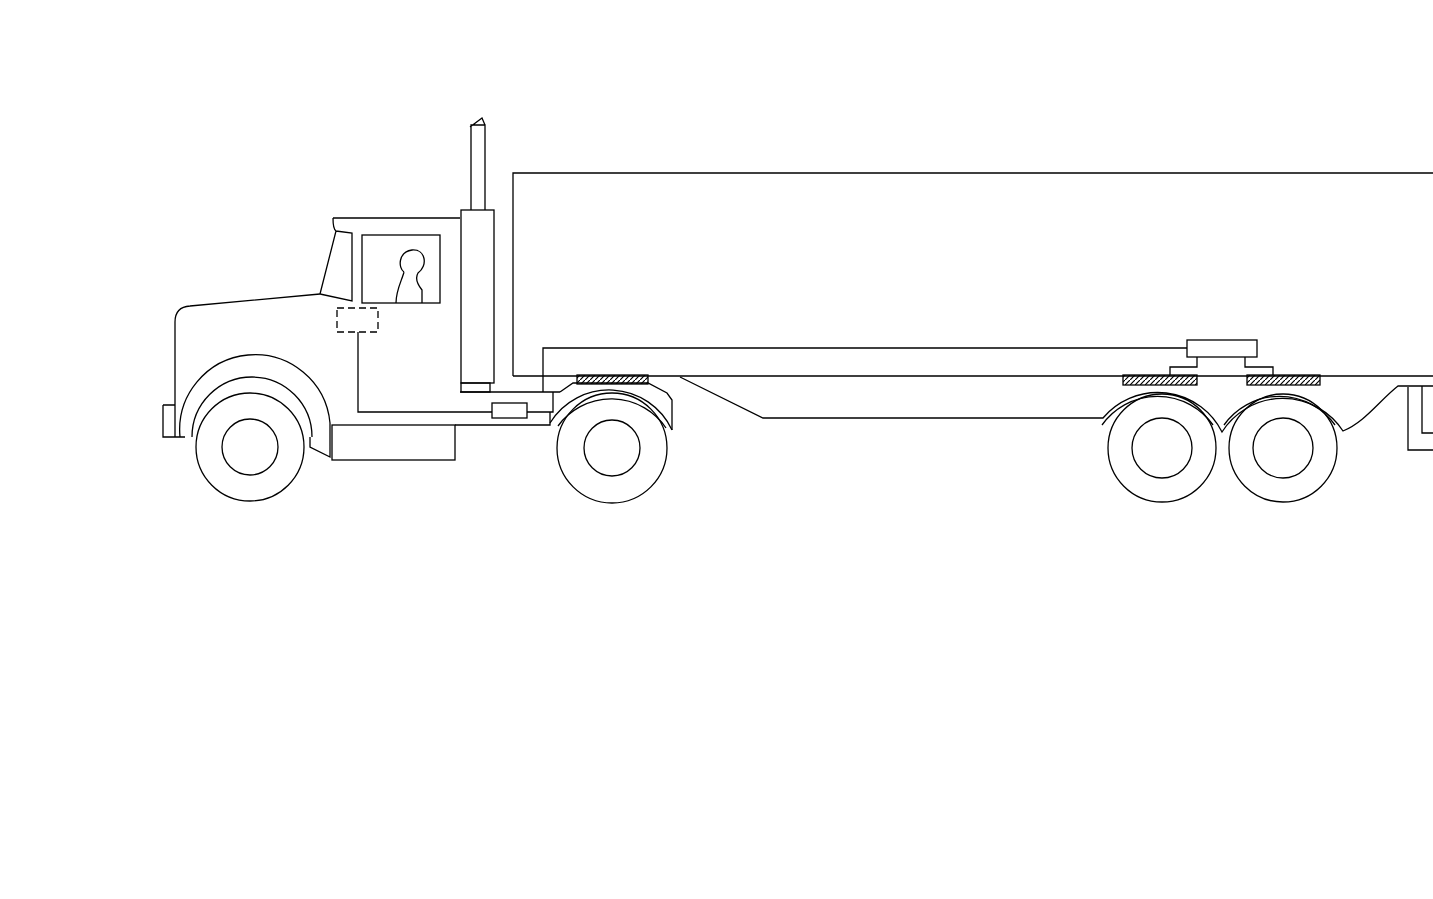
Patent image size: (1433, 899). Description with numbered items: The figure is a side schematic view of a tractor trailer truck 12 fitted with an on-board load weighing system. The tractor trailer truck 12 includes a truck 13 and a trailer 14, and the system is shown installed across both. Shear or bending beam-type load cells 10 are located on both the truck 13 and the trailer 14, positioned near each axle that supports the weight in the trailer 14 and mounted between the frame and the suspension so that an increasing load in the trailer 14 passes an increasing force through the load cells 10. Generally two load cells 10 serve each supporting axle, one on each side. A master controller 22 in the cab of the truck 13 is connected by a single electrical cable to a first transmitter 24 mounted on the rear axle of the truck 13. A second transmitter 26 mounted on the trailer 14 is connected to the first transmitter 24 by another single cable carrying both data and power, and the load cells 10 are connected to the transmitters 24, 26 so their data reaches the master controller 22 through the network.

The load cell 10 is at (617, 375).
The tractor trailer truck 12 is at (296, 103).
The truck 13 is at (197, 341).
The trailer 14 is at (1117, 207).
The master controller 22 is at (343, 320).
The first transmitter 24 is at (507, 418).
The second transmitter 26 is at (1223, 345).